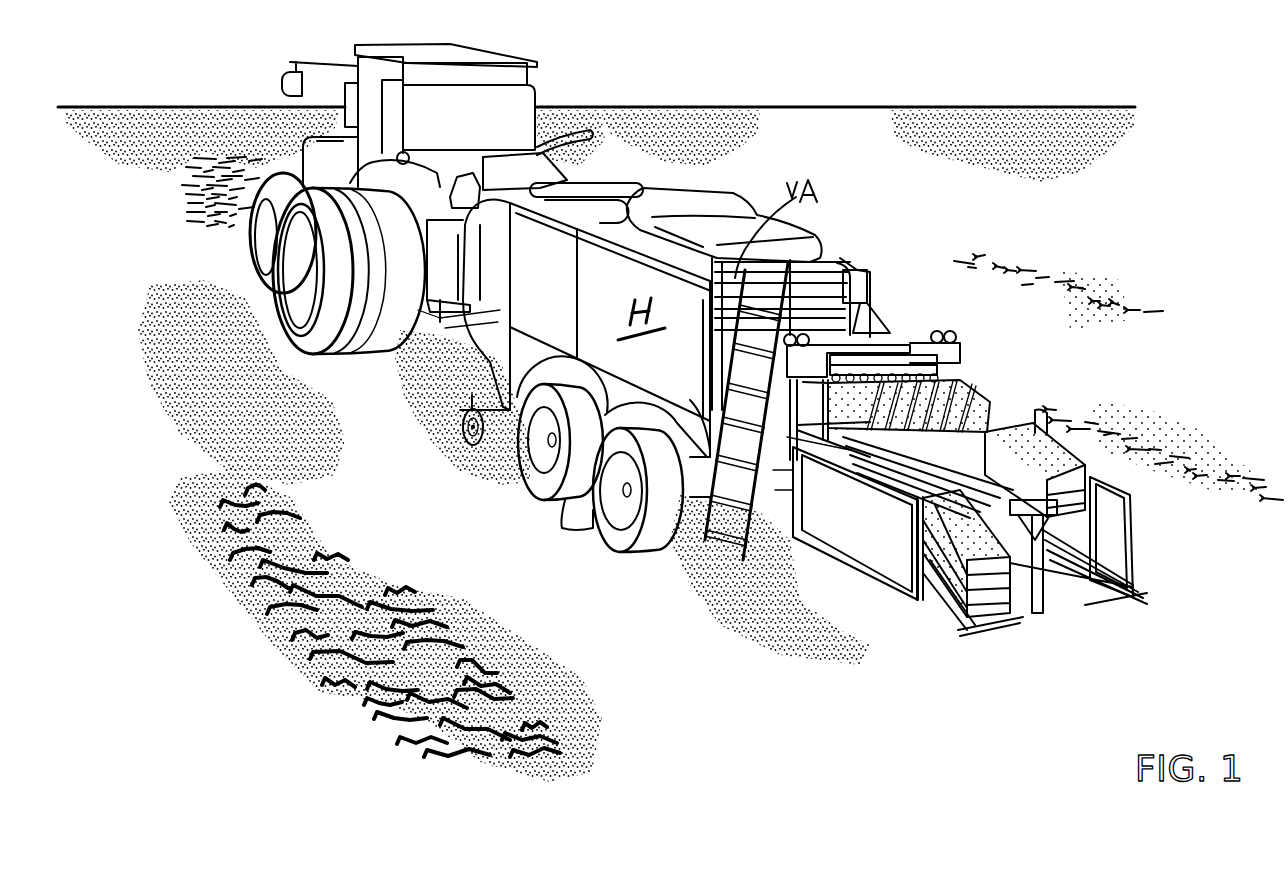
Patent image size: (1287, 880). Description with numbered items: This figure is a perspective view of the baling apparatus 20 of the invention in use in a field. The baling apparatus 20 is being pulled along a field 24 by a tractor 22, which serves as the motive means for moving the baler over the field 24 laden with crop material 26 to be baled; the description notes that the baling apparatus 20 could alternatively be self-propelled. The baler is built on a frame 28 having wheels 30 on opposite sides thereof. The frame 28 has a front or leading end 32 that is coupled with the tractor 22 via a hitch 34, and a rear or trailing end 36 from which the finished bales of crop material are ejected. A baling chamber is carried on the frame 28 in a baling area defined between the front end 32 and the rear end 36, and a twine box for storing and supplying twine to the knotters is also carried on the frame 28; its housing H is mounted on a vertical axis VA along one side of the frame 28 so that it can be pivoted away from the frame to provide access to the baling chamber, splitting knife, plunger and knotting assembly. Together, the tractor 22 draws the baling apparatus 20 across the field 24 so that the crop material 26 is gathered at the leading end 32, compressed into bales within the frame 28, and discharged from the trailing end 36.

The baling apparatus 20 is at (871, 200).
The tractor 22 is at (556, 89).
The field 24 is at (1187, 373).
The crop material 26 is at (197, 199).
The frame 28 is at (513, 353).
The wheels 30 is at (562, 528).
The front or leading end 32 is at (499, 348).
The hitch 34 is at (970, 522).
The rear or trailing end 36 is at (770, 494).